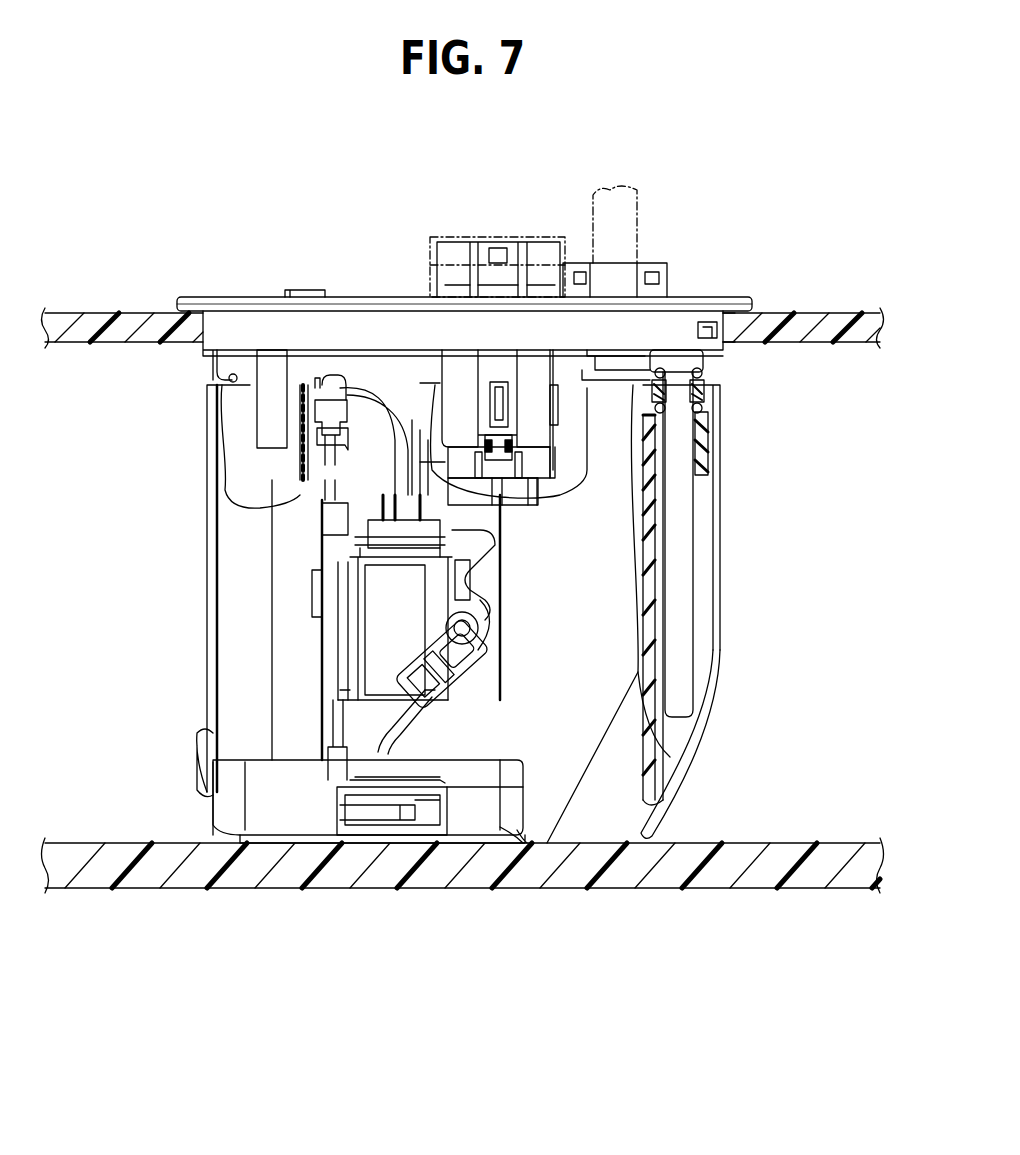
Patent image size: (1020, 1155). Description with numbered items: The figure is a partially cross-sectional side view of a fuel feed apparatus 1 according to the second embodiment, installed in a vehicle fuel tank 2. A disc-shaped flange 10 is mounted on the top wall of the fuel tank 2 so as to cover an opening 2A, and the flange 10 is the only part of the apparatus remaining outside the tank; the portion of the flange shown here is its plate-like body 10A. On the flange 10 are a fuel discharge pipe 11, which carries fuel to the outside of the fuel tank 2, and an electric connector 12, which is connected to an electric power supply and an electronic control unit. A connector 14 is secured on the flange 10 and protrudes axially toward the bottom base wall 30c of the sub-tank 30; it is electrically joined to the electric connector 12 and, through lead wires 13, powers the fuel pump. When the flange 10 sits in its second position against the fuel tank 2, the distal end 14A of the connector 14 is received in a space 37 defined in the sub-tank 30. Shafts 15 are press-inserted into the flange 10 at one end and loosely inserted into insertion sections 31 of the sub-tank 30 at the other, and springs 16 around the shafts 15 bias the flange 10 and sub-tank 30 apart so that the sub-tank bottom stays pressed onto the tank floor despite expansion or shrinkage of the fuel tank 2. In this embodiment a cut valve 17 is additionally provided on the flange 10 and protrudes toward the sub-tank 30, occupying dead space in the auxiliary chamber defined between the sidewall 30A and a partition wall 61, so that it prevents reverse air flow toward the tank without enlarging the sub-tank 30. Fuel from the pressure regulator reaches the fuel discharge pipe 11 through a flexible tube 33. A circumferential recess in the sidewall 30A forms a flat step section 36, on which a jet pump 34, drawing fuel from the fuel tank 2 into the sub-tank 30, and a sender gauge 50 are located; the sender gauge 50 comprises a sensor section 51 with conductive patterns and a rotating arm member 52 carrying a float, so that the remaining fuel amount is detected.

The fuel feed apparatus 1 is at (180, 238).
The fuel tank 2 is at (70, 320).
The opening 2A is at (745, 320).
The flange 10 is at (178, 304).
The flange portion of lid 10A is at (423, 297).
The fuel discharge pipe 11 is at (637, 243).
The electric connector 12 is at (448, 240).
The lead wires 13 is at (600, 500).
The connector 14 is at (438, 368).
The distal end 14A is at (560, 468).
The shafts 15 is at (270, 432).
The springs 16 is at (228, 377).
The cut valve 17 is at (248, 392).
The sub-tank 30 is at (727, 582).
The sidewall 30A is at (720, 638).
The bottom base wall 30c is at (507, 843).
The insertion sections 31 is at (686, 432).
The flexible tube 33 is at (590, 374).
The jet pump 34 is at (320, 811).
The step section 36 is at (350, 710).
The space 37 is at (430, 460).
The sender gauge 50 is at (340, 650).
The sensor section 51 is at (478, 700).
The arm member 52 is at (385, 730).
The wall 61 is at (420, 447).